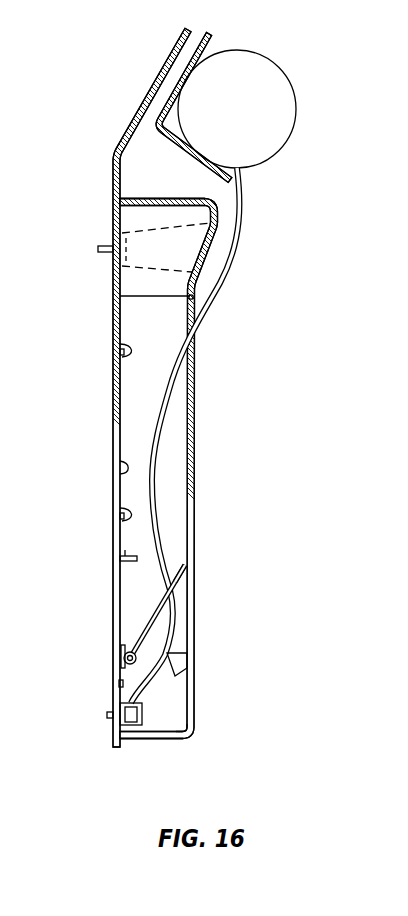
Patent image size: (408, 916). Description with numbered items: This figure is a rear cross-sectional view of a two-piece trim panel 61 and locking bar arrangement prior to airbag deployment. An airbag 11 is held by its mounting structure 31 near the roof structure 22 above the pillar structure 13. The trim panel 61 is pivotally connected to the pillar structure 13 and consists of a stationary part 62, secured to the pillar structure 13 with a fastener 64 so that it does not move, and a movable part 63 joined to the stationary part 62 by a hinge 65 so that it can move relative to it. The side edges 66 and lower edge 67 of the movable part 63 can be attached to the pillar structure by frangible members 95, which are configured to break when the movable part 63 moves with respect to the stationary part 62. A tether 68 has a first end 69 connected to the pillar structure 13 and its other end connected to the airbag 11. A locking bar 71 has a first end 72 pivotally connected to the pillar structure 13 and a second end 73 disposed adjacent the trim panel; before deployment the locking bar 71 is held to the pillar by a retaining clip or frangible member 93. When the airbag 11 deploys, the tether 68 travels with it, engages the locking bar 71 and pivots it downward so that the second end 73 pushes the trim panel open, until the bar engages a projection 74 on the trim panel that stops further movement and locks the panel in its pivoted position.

The airbag 11 is at (298, 108).
The pillar structure 13 is at (204, 456).
The roof structure 22 is at (137, 113).
The mounting structure 31 is at (212, 40).
The two-piece trim panel 61 is at (192, 738).
The stationary part 62 is at (141, 198).
The movable part 63 is at (133, 740).
The fastener 64 is at (100, 252).
The hinge 65 is at (194, 297).
The side edges 66 is at (120, 463).
The lower edge 67 is at (172, 730).
The tether 68 is at (216, 285).
The first end 69 is at (112, 710).
The locking bar 71 is at (161, 602).
The first end 72 is at (122, 646).
The second end 73 is at (190, 572).
The projection 74 is at (182, 670).
The frangible member 93 is at (120, 557).
The frangible members 95 is at (120, 345).